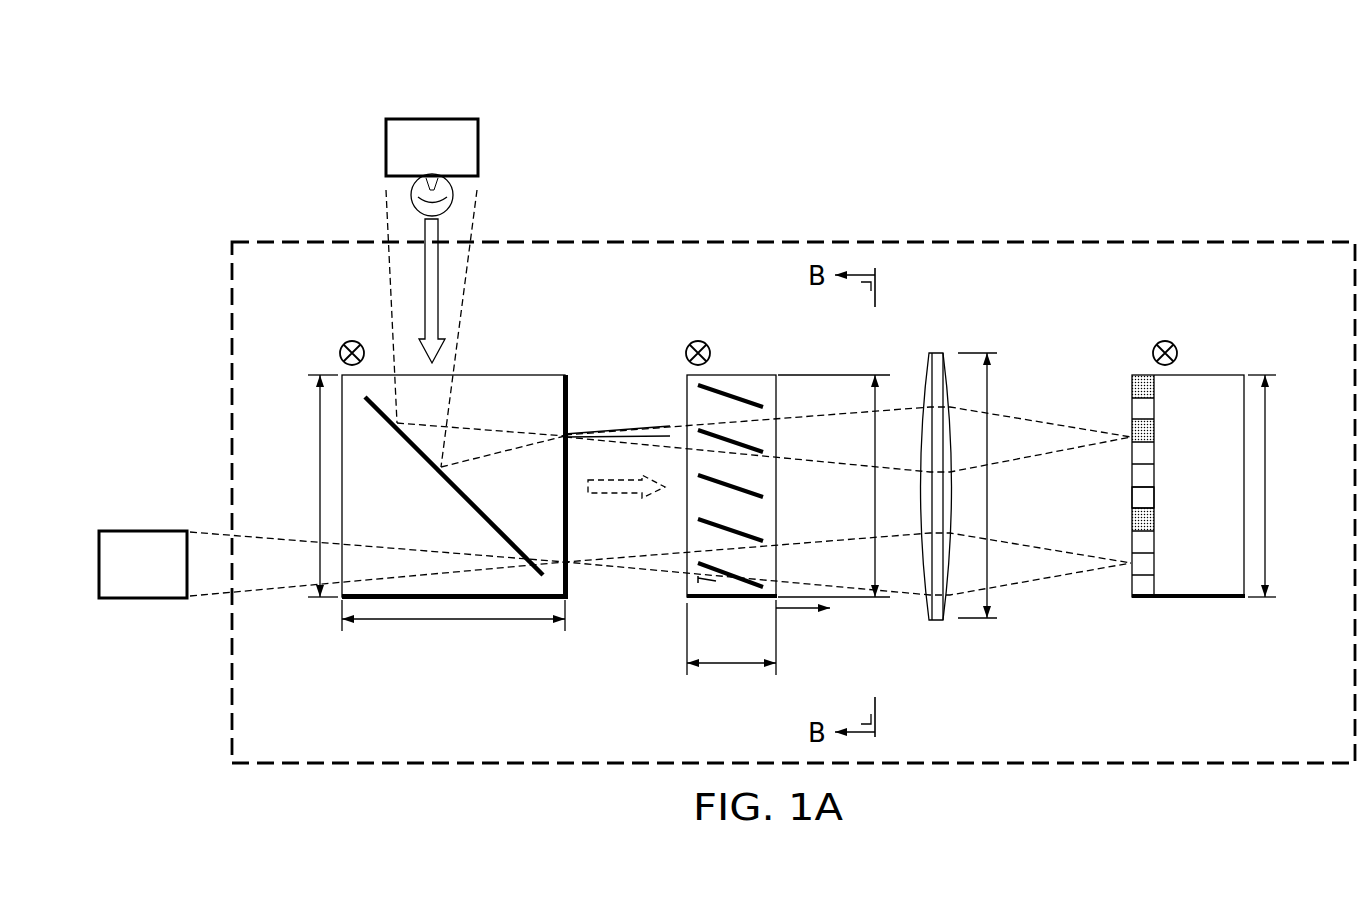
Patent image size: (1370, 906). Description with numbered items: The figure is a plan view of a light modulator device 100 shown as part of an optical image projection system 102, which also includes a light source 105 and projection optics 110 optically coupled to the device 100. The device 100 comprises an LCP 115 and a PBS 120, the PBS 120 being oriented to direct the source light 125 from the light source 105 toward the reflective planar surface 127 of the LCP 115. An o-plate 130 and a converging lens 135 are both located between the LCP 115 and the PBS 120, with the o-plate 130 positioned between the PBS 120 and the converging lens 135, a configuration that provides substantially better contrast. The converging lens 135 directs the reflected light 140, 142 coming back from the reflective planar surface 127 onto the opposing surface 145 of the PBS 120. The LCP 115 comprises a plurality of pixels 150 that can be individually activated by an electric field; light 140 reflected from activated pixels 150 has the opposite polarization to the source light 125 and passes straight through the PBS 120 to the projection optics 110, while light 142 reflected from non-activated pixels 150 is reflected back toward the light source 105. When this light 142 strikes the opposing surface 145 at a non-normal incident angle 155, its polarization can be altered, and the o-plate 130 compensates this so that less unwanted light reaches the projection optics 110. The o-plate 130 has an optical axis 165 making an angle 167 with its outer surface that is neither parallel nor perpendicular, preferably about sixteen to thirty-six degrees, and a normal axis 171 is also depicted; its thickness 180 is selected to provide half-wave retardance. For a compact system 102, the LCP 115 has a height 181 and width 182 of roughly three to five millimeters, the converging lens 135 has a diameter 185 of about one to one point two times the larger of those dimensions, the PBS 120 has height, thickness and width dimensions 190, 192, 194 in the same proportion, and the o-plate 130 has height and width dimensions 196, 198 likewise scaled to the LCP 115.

The light modulator device 100 is at (1000, 241).
The optical image projection system 102 is at (966, 114).
The light source 105 is at (453, 161).
The projection optics 110 is at (163, 578).
The LCP 115 is at (1210, 372).
The PBS 120 is at (533, 372).
The source light 125 is at (438, 315).
The reflective planar surface 127 is at (1129, 476).
The o-plate 130 is at (755, 372).
The converging lens 135 is at (937, 352).
The reflected light 140 is at (1030, 573).
The reflected light 142 is at (1031, 427).
The opposing surface 145 is at (452, 487).
The pixels 150 is at (1145, 497).
The incident angle 155 is at (625, 428).
The optical axis 165 is at (745, 432).
The angle 167 is at (706, 584).
The normal axis 171 is at (801, 612).
The thickness 180 is at (727, 667).
The height 181 is at (1163, 341).
The width 182 is at (1268, 483).
The diameter 185 is at (988, 509).
The height dimension 190 is at (353, 341).
The thickness dimension 192 is at (455, 620).
The width dimension 194 is at (318, 486).
The height dimension 196 is at (697, 341).
The width dimension 198 is at (873, 480).